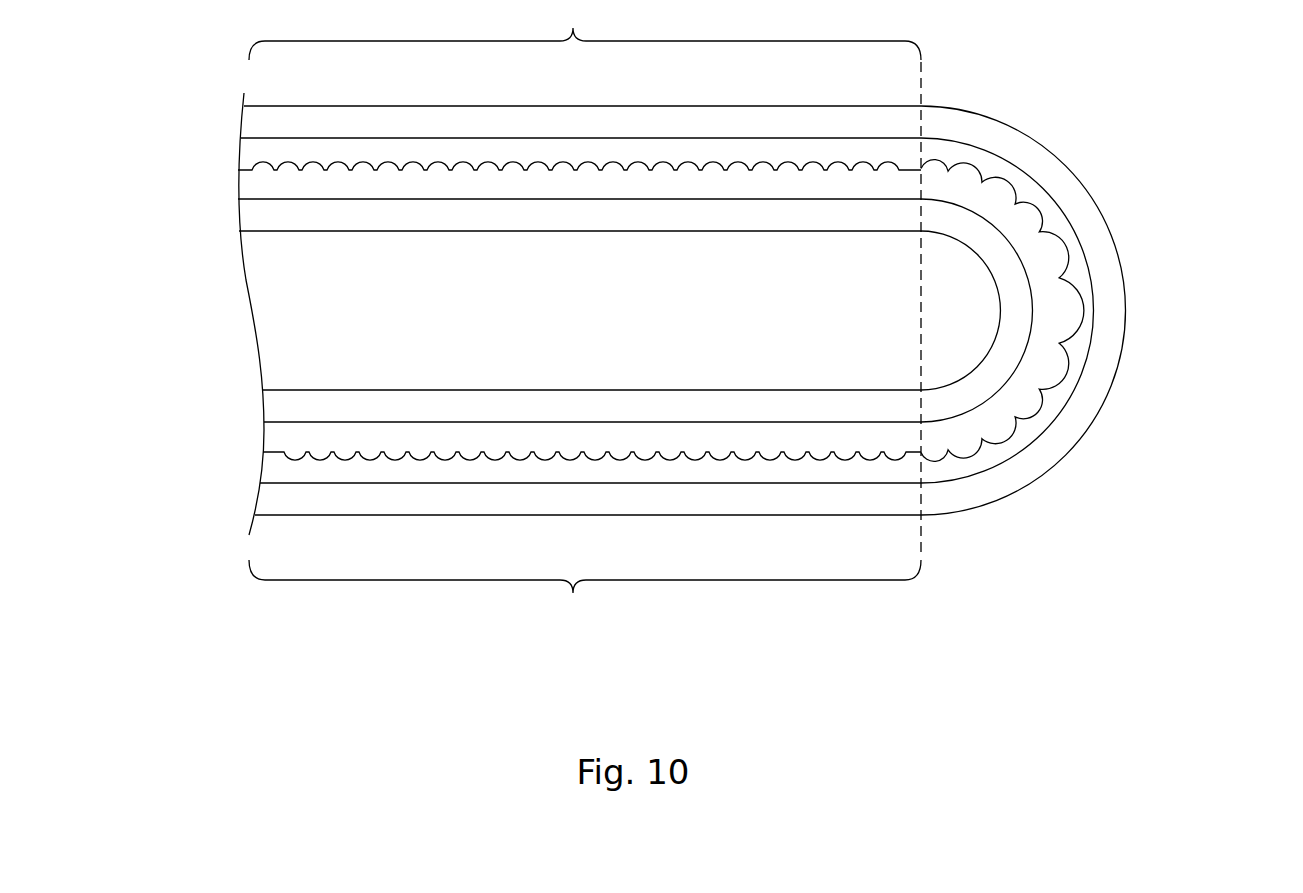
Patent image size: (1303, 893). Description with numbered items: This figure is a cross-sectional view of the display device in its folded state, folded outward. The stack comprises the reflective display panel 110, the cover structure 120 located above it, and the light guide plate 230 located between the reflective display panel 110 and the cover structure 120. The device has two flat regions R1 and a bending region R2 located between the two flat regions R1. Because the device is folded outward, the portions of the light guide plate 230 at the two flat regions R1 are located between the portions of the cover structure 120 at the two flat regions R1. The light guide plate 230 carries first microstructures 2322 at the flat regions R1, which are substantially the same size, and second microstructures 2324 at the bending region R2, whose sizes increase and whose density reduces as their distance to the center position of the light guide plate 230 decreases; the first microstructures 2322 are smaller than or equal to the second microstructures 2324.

The reflective display panel 110 is at (248, 215).
The cover structure 120 is at (248, 123).
The light guide plate 230 is at (701, 313).
The first microstructures 2322 is at (511, 168).
The second microstructures 2324 is at (1053, 311).
The flat region R1 is at (585, 312).
The bending region R2 is at (1145, 272).